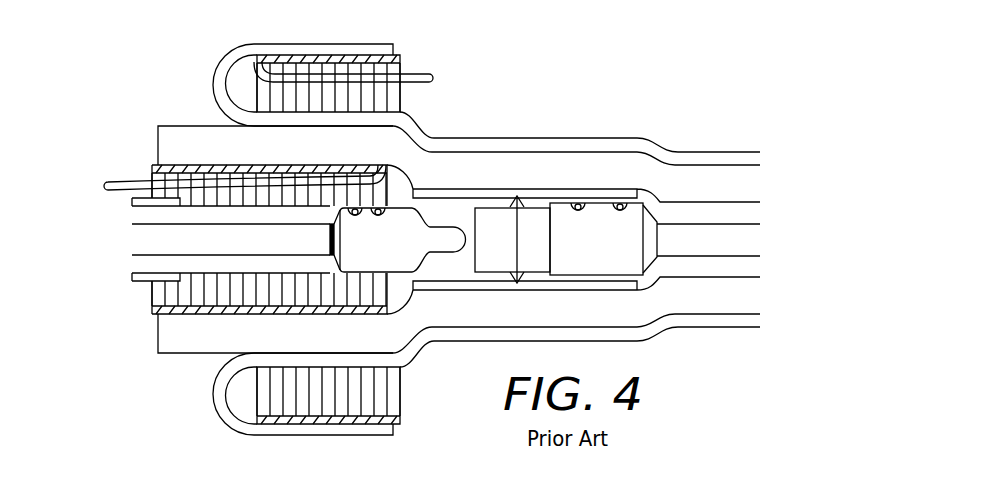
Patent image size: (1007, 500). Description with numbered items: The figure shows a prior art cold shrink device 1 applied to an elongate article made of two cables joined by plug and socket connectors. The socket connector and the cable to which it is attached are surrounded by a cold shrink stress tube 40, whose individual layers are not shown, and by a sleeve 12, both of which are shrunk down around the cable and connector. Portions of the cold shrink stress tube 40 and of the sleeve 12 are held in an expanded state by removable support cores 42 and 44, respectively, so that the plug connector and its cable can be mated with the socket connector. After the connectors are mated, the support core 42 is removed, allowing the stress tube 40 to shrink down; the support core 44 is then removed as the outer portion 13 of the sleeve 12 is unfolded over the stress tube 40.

The connector assembly 1 is at (86, 221).
The sleeve 12 is at (591, 137).
The outer portion 13 is at (273, 50).
The cold shrink stress tube 40 is at (158, 133).
The support core 42 is at (197, 193).
The support core 44 is at (404, 98).